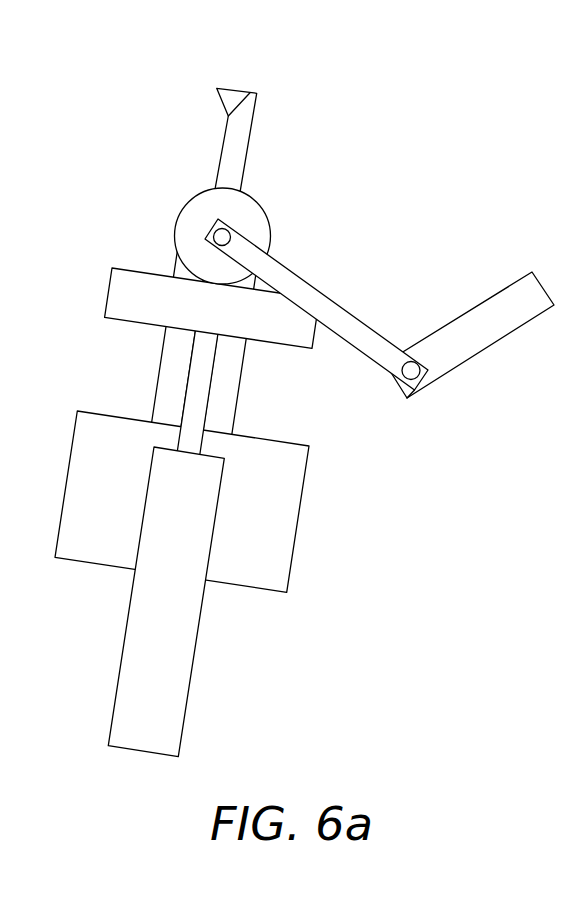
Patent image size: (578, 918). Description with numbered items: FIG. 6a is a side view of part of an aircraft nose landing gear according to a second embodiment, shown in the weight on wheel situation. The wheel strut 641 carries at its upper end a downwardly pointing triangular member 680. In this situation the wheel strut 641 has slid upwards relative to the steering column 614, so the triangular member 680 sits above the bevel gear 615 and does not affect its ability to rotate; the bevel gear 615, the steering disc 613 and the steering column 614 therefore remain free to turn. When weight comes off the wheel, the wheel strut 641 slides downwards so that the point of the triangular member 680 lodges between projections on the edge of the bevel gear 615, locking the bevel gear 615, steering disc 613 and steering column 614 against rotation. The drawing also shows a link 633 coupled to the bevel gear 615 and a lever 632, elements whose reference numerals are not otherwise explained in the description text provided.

The triangular member 680 is at (233, 92).
The bevel gear 615 is at (178, 230).
The steering disc 613 is at (117, 295).
The connecting link 633 is at (346, 311).
The lever arm 632 is at (487, 340).
The steering column 614 is at (294, 518).
The wheel strut 641 is at (189, 657).